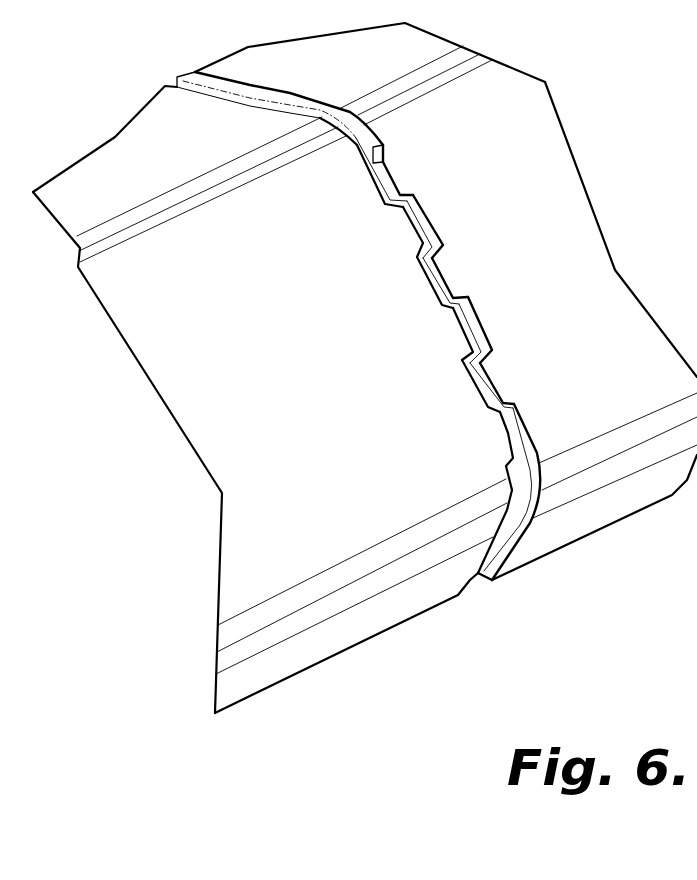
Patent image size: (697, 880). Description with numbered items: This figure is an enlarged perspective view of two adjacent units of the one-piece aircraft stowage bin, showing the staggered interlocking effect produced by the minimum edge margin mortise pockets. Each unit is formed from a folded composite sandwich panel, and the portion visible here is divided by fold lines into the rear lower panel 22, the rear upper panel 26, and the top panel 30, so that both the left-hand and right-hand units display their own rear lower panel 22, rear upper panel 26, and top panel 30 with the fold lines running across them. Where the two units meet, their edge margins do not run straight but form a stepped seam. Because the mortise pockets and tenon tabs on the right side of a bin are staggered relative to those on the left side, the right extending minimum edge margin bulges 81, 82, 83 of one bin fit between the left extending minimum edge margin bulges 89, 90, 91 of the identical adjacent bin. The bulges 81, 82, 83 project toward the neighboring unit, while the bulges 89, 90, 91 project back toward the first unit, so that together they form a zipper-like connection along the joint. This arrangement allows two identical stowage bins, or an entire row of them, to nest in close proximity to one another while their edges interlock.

The rear lower panel 22 is at (317, 666).
The rear upper panel 26 is at (311, 406).
The top panel 30 is at (175, 165).
The right extending minimum edge margin bulge 81 is at (502, 436).
The right extending minimum edge margin bulge 82 is at (466, 334).
The right extending minimum edge margin bulge 83 is at (410, 229).
The left extending minimum edge margin bulge 89 is at (495, 380).
The left extending minimum edge margin bulge 90 is at (447, 275).
The left extending minimum edge margin bulge 91 is at (395, 178).